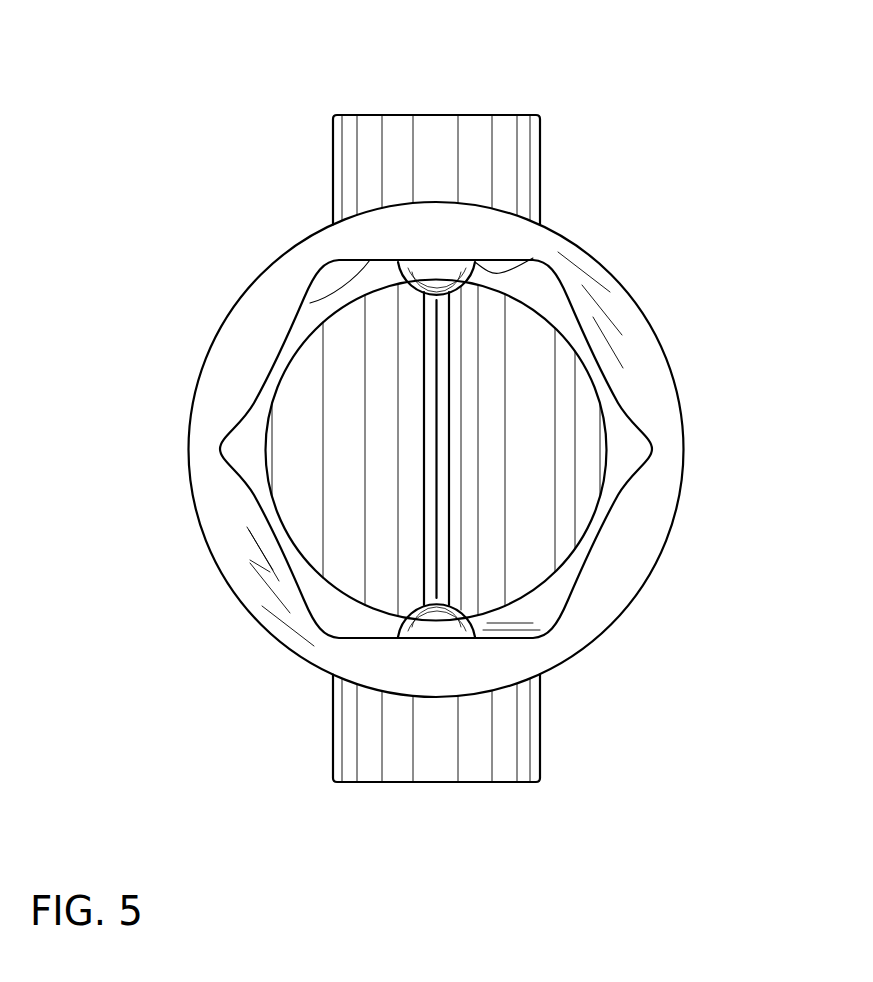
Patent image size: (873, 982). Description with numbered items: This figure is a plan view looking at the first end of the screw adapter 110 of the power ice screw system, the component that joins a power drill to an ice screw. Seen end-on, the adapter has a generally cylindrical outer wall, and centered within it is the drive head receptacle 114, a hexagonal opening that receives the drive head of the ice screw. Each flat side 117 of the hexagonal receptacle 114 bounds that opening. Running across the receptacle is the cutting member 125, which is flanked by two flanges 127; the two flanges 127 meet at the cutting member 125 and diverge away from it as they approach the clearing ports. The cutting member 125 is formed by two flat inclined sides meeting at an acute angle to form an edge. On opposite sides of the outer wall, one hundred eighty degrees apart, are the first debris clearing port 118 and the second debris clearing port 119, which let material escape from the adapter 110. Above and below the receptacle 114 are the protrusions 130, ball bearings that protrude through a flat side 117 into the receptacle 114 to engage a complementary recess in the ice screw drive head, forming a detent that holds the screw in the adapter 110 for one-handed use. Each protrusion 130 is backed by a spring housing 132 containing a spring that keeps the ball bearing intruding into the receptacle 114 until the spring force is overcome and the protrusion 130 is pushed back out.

The screw adapter 110 is at (178, 88).
The drive head receptacle 114 is at (298, 502).
The flat side 117 is at (310, 303).
The first debris clearing port 118 is at (177, 445).
The second debris clearing port 119 is at (697, 447).
The cutting member 125 is at (437, 338).
The flanges 127 is at (378, 459).
The protrusions 130 is at (532, 258).
The spring housing 132 is at (508, 114).